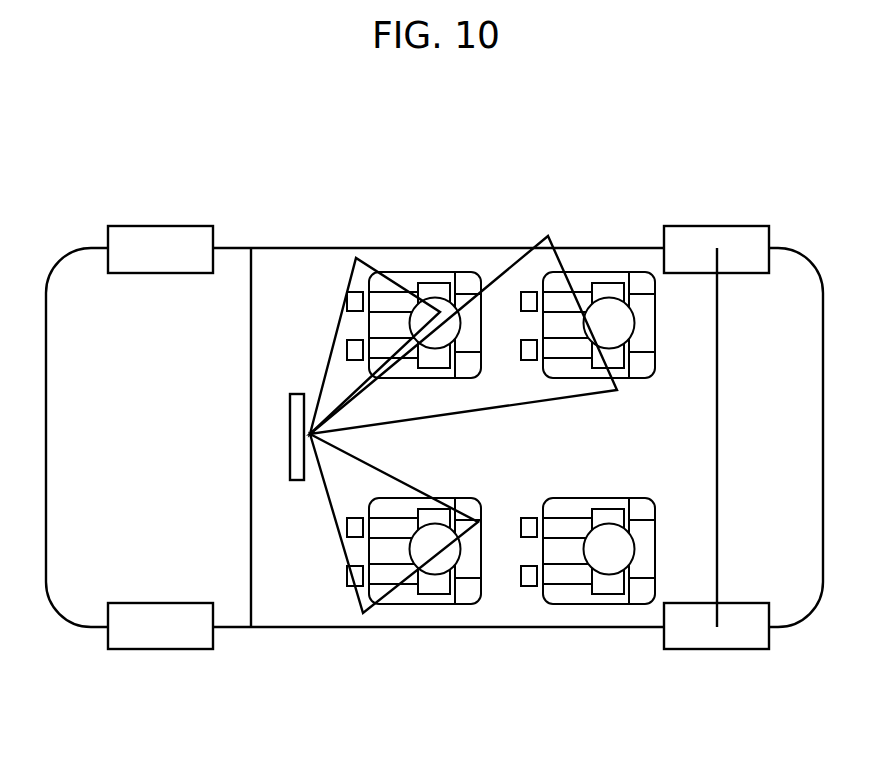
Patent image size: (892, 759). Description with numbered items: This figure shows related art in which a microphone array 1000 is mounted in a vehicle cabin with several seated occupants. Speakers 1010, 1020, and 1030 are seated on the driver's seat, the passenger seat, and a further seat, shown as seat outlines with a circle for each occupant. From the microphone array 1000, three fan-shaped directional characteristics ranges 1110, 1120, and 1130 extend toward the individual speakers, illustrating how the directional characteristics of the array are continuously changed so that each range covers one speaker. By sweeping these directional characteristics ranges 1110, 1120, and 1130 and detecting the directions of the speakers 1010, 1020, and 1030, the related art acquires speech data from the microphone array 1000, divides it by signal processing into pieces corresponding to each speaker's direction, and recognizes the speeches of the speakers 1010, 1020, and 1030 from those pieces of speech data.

The microphone array 1000 is at (298, 480).
The speaker 1010 is at (440, 302).
The speaker 1020 is at (435, 568).
The speaker 1030 is at (616, 300).
The directional characteristics range 1110 is at (349, 260).
The directional characteristics range 1120 is at (363, 613).
The directional characteristics range 1130 is at (526, 260).